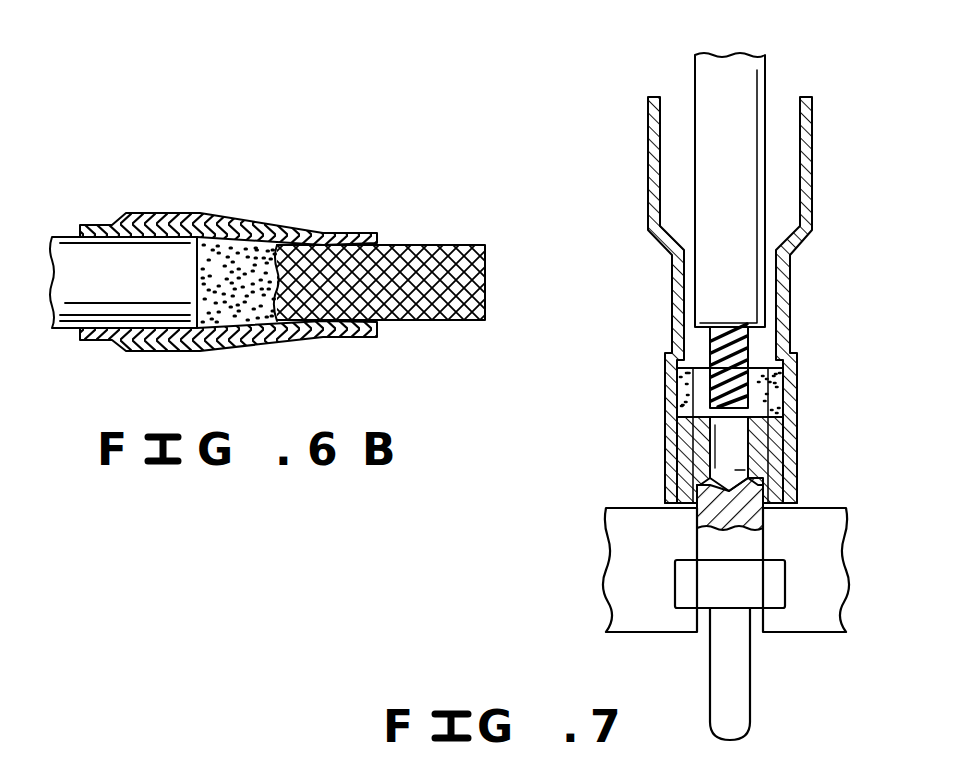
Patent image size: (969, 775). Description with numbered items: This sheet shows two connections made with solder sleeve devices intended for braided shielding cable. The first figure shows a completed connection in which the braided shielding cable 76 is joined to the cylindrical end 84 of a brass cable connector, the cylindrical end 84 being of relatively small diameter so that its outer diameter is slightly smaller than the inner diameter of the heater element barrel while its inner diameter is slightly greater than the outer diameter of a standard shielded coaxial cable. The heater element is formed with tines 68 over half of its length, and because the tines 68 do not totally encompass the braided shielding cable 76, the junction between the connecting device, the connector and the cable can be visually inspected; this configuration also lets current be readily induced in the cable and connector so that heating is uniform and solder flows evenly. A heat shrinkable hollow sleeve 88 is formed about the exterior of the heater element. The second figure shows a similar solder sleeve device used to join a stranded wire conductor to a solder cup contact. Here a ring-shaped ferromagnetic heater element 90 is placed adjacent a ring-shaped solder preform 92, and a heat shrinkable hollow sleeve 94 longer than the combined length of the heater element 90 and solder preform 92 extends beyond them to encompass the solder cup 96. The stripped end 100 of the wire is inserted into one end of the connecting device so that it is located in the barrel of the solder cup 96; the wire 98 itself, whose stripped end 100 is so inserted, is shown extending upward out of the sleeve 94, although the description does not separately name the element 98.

In FIG. 6B, the tines 68 is at (325, 340).
In FIG. 6B, the braided shielding cable 76 is at (477, 245).
In FIG. 6B, the cylindrical end 84 is at (149, 296).
In FIG. 6B, the heat shrinkable hollow sleeve 88 is at (375, 233).
In FIG. 7, the ring-shaped ferromagnetic heater element 90 is at (683, 447).
In FIG. 7, the ring-shaped solder preform 92 is at (786, 387).
In FIG. 7, the heat shrinkable hollow sleeve 94 is at (808, 197).
In FIG. 7, the solder cup 96 is at (757, 515).
In FIG. 7, the pin / rod 98 is at (803, 97).
In FIG. 7, the stripped end 100 is at (745, 362).